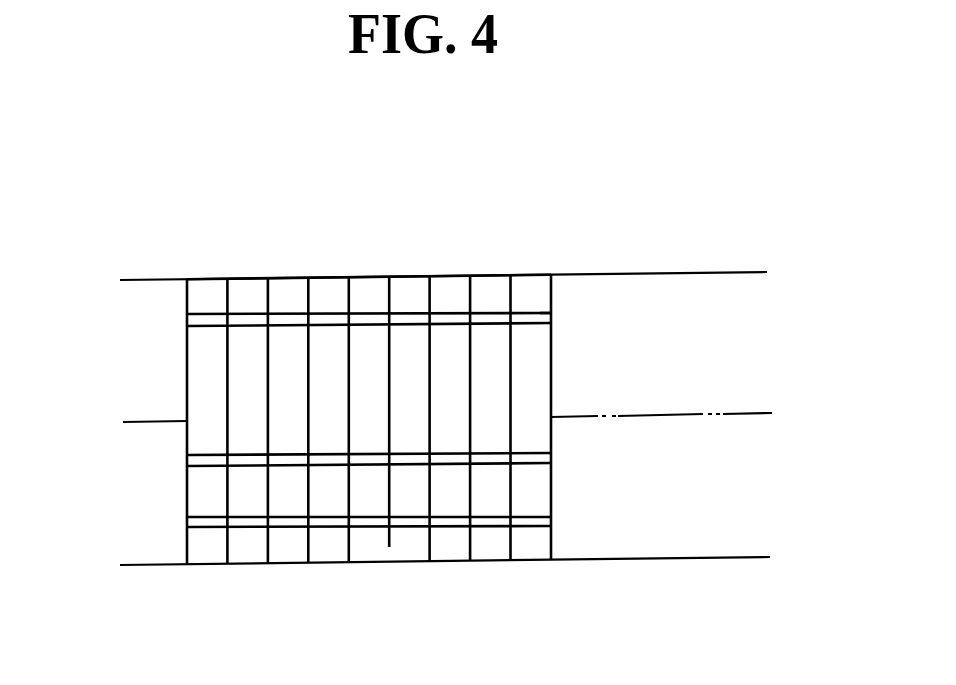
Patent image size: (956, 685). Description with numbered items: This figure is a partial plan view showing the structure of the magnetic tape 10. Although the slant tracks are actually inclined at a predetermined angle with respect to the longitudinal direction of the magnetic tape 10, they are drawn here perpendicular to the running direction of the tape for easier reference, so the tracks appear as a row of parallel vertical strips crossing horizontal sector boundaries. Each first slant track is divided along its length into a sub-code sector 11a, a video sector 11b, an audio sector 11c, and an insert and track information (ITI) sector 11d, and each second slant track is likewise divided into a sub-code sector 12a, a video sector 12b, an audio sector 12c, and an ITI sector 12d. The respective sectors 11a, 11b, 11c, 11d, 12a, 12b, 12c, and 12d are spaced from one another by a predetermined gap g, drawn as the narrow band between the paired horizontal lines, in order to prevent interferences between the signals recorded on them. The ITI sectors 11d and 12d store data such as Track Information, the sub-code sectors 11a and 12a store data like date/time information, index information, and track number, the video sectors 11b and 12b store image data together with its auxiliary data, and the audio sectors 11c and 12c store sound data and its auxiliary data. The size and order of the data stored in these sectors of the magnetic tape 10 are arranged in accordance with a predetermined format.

The magnetic tape 10 is at (552, 246).
The sub-code sector 11a is at (209, 290).
The video sector 11b is at (199, 364).
The audio sector 11c is at (200, 489).
The insert and track information (ITI) sector 11d is at (203, 550).
The sub-code sector 12a is at (247, 290).
The video sector 12b is at (255, 359).
The audio sector 12c is at (257, 487).
The insert and track information (ITI) sector 12d is at (256, 553).
The gap g is at (563, 292).